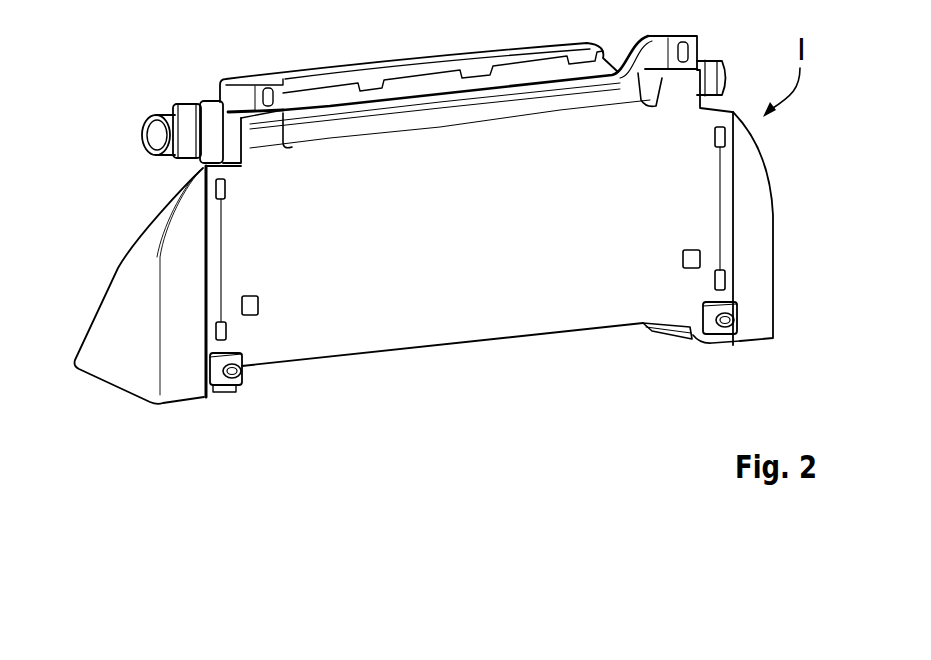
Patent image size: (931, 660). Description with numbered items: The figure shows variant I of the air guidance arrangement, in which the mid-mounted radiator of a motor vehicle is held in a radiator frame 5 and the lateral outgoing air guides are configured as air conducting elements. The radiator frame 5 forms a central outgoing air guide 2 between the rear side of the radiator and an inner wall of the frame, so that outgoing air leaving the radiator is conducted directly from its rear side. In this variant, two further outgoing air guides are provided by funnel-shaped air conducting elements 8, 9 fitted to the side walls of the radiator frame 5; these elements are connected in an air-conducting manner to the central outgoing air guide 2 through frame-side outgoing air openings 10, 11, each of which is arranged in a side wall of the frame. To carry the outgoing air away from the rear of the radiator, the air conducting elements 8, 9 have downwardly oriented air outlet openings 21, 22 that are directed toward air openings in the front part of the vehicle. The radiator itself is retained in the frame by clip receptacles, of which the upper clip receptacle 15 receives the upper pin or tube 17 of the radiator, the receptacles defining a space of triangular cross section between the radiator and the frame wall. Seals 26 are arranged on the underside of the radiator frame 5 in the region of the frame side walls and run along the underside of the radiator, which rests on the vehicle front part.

The central outgoing air guide 2 is at (408, 353).
The radiator frame 5 is at (553, 293).
The funnel-shaped air conducting element 8 is at (767, 250).
The funnel-shaped air conducting element 9 is at (112, 307).
The frame-side outgoing air opening 10 is at (220, 225).
The frame-side outgoing air opening 11 is at (720, 181).
The clip receptacle 15 is at (208, 111).
The upper pin or tube 17 is at (170, 113).
The air outlet opening 21 is at (120, 390).
The air outlet opening 22 is at (753, 343).
The seal 26 is at (675, 330).